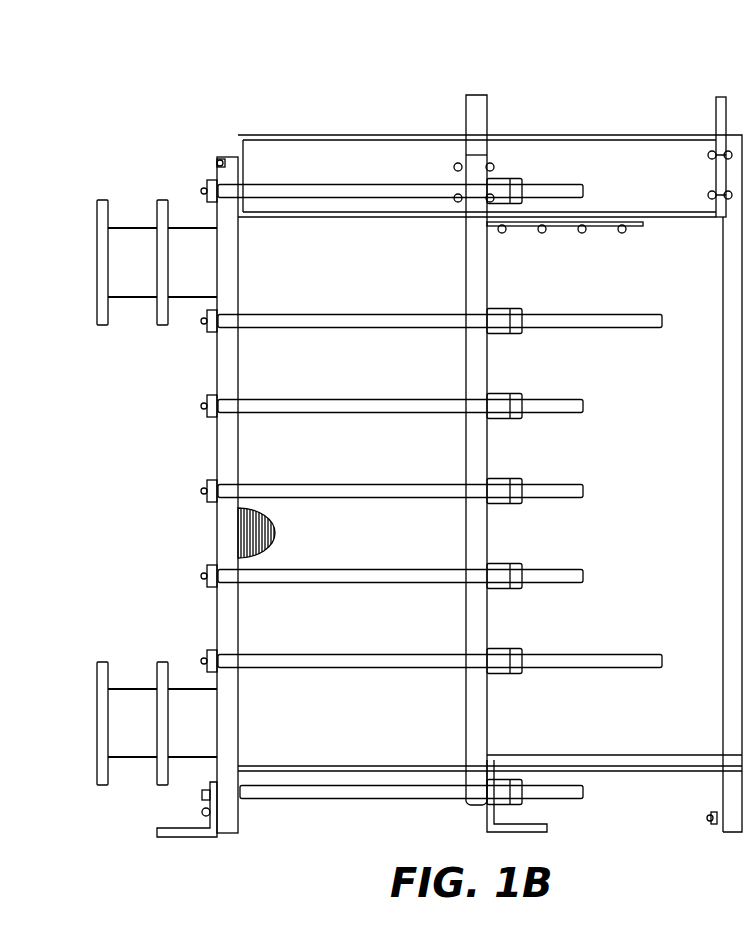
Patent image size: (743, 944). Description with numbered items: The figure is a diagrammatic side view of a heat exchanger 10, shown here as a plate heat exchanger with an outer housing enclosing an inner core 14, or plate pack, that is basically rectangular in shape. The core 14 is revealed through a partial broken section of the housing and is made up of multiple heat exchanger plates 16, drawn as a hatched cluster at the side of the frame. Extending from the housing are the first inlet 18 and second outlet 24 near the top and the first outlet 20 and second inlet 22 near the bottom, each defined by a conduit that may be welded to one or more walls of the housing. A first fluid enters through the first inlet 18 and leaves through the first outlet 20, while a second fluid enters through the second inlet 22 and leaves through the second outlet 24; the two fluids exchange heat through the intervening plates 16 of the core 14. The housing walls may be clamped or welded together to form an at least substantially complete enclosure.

The heat exchanger 10 is at (645, 62).
The inner core 14 is at (240, 549).
The heat exchanger plates 16 is at (246, 534).
The first inlet 18 is at (103, 200).
The first outlet 20 is at (103, 786).
The second inlet 22 is at (162, 786).
The second outlet 24 is at (162, 200).